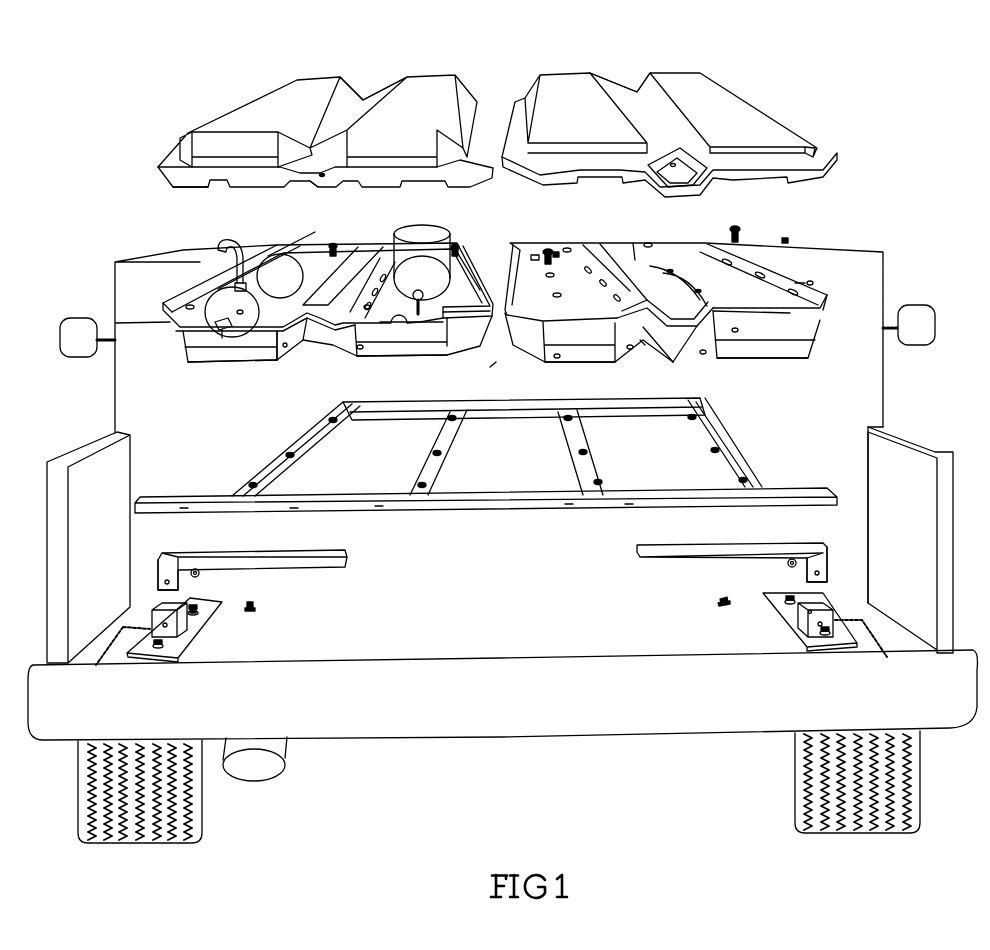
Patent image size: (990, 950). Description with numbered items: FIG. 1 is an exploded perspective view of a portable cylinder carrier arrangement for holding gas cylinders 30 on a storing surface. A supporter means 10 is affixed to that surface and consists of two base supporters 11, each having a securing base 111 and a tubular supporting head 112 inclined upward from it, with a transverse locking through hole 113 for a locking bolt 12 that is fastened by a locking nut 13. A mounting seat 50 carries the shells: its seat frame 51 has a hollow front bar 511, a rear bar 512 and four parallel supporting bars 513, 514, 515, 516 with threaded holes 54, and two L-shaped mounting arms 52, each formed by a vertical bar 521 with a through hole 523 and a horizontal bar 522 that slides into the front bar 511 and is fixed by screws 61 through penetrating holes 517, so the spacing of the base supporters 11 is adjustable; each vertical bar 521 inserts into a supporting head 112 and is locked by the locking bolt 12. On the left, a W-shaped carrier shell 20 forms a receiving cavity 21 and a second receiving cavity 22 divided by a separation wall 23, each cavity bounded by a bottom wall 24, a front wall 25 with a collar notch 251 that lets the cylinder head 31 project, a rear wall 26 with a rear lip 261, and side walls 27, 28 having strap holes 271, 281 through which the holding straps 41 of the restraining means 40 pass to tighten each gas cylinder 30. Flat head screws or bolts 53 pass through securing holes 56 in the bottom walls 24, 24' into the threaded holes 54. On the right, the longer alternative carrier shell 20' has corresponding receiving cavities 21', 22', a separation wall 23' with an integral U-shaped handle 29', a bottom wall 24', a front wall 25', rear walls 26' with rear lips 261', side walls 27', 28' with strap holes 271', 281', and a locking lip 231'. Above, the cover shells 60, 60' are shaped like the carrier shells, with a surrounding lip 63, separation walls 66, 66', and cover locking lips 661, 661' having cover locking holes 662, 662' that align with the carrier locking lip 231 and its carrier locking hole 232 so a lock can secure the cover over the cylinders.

The supporter means 10 is at (230, 655).
The base supporter 11 is at (148, 608).
The locking bolt 12 is at (122, 623).
The locking nut 13 is at (207, 574).
The carrier shell 20 is at (304, 338).
The alternative carrier shell 20' is at (716, 335).
The receiving cavity 21 is at (160, 286).
The side wall 21' is at (564, 252).
The second receiving cavity 22 is at (482, 258).
The rear wall 22' is at (760, 256).
The separation wall 23 is at (353, 252).
The separation wall 23' is at (676, 230).
The bottom wall 24 is at (674, 316).
The bottom wall 24' is at (547, 226).
The front wall 25 is at (299, 376).
The bottom 25' is at (688, 364).
The rear wall 26 is at (415, 224).
The screw 26' is at (647, 228).
The side wall 27 is at (278, 317).
The slot 27' is at (652, 367).
The side wall 28 is at (427, 284).
The shelf 28' is at (740, 262).
The U-shaped handle 29' is at (678, 354).
The gas cylinder 30 is at (302, 257).
The cylinder head 31 is at (497, 331).
The restraining means 40 is at (222, 248).
The holding strap 41 is at (243, 258).
The mounting seat 50 is at (852, 402).
The seat frame 51 is at (775, 466).
The mounting arm 52 is at (147, 548).
The flat head screw or bolt 53 is at (420, 314).
The threaded hole 54 is at (292, 456).
The securing hole 56 is at (597, 322).
The cover shell 60 is at (325, 117).
The cover shell 60' is at (694, 132).
The screw 61 is at (260, 607).
The surrounding lip 63 is at (158, 170).
The separation wall 66 is at (381, 71).
The protrusion 66' is at (620, 58).
The securing base 111 is at (175, 645).
The tubular supporting head 112 is at (155, 620).
The locking through hole 113 is at (810, 612).
The carrier locking lip 231 is at (324, 342).
The recess 231' is at (669, 344).
The carrier locking hole 232 is at (295, 335).
The collar notch 251 is at (285, 345).
The rear lip 261 is at (498, 232).
The hole 261' is at (580, 234).
The strap hole 271 is at (258, 267).
The slot 271' is at (569, 295).
The strap hole 281 is at (527, 361).
The slot 281' is at (763, 249).
The front bar 511 is at (523, 505).
The rear bar 512 is at (703, 402).
The supporting bar 513 is at (335, 432).
The supporting bar 514 is at (440, 460).
The supporting bar 515 is at (600, 462).
The supporting bar 516 is at (712, 428).
The penetrating hole 517 is at (183, 510).
The vertical bar 521 is at (172, 575).
The horizontal bar 522 is at (297, 563).
The through hole 523 is at (183, 586).
The cover locking lip 661 is at (292, 109).
The rib 661' is at (722, 113).
The cover locking hole 662 is at (327, 106).
The hole 662' is at (695, 98).